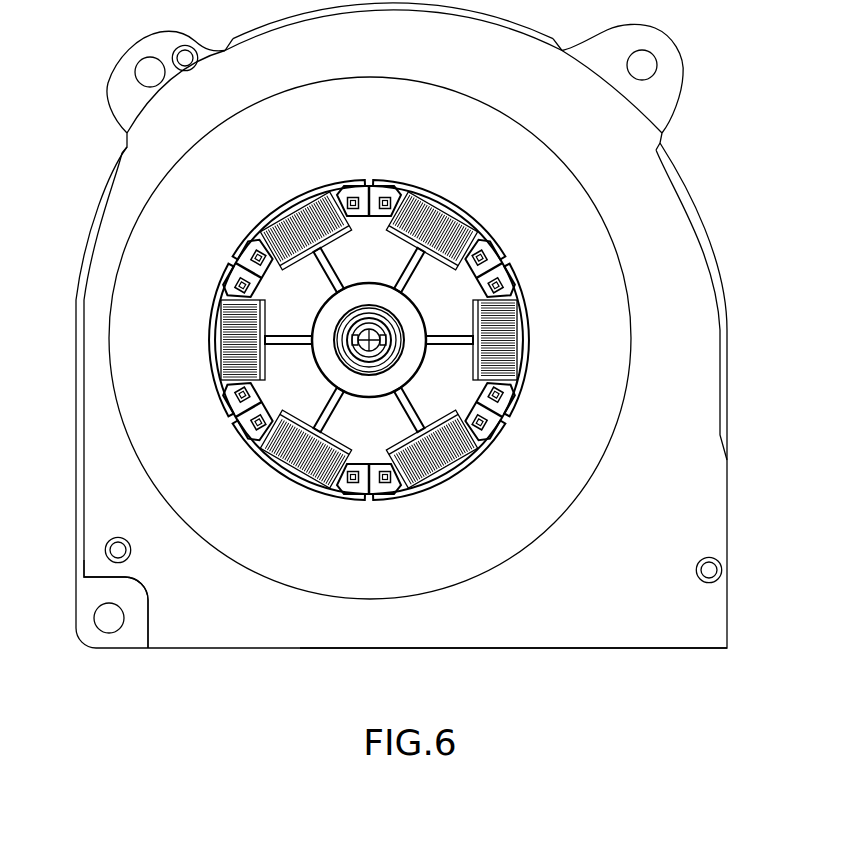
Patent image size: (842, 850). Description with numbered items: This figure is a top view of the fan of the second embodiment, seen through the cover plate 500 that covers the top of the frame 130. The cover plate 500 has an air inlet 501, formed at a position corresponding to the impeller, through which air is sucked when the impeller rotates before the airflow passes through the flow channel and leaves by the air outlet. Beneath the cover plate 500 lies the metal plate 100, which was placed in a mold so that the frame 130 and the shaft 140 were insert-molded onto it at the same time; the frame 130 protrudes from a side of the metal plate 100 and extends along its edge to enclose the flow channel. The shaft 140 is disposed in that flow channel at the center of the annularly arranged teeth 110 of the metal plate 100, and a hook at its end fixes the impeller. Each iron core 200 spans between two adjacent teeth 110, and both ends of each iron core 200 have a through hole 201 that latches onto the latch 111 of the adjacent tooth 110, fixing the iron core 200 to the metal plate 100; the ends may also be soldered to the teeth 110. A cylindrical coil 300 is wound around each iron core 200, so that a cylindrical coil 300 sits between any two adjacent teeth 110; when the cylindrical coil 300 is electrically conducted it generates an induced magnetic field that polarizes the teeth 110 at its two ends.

The metal plate 100 is at (270, 553).
The teeth 110 is at (498, 360).
The latch 111 is at (494, 282).
The frame 130 is at (85, 603).
The shaft 140 is at (356, 324).
The iron core 200 is at (522, 287).
The through hole 201 is at (515, 270).
The cylindrical coil 300 is at (503, 342).
The cover plate 500 is at (603, 632).
The air inlet 501 is at (503, 563).